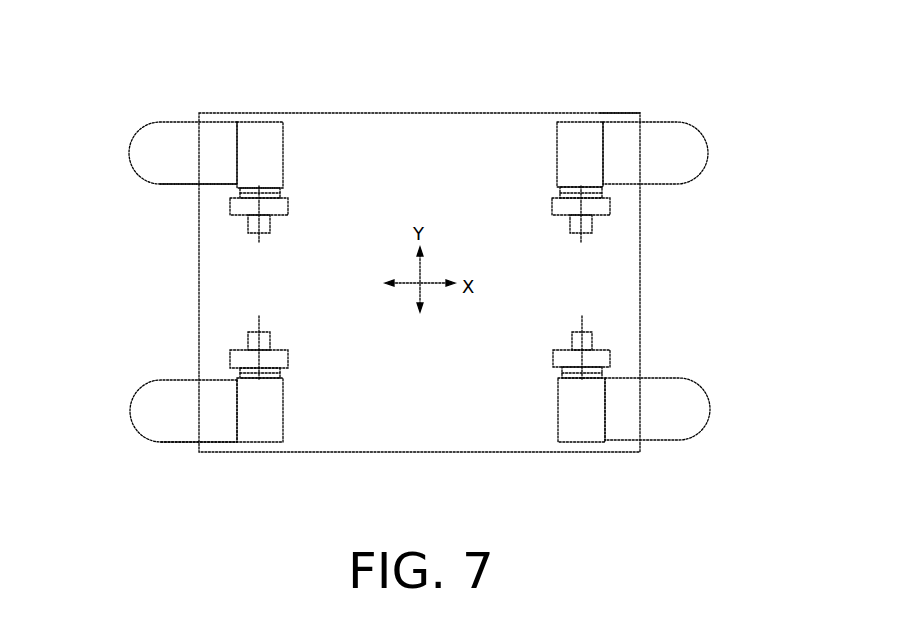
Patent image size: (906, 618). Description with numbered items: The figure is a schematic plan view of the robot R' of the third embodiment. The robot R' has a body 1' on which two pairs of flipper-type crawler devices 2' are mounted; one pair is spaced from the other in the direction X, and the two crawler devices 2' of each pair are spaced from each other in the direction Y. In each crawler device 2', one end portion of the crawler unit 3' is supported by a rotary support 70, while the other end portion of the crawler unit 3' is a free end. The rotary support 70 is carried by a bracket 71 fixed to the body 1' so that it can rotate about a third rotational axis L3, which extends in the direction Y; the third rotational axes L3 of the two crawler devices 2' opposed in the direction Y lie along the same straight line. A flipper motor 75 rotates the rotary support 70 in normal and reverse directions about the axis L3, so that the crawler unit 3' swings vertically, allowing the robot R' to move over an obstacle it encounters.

The body 1' is at (419, 248).
The flipper-type crawler device 2' is at (415, 241).
The crawler unit 3' is at (192, 338).
The rotary support 70 is at (273, 157).
The bracket 71 is at (288, 207).
The flipper motor 75 is at (247, 227).
The third rotational axis L3 is at (258, 238).
The robot R' is at (627, 69).